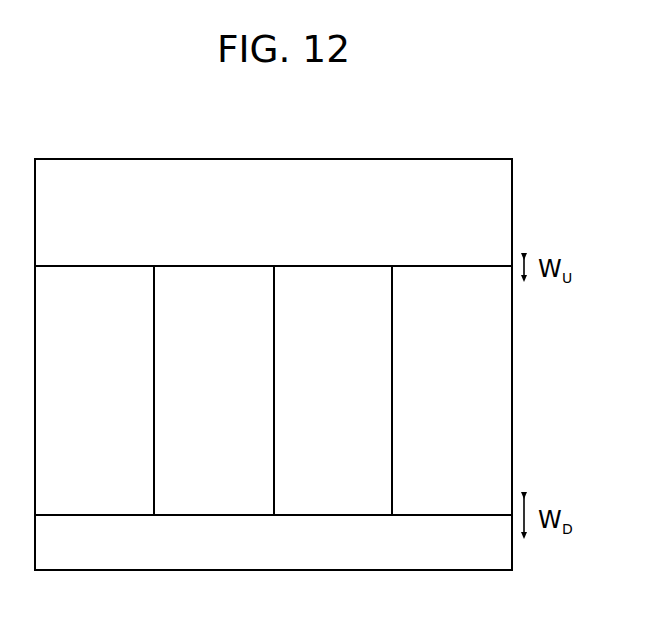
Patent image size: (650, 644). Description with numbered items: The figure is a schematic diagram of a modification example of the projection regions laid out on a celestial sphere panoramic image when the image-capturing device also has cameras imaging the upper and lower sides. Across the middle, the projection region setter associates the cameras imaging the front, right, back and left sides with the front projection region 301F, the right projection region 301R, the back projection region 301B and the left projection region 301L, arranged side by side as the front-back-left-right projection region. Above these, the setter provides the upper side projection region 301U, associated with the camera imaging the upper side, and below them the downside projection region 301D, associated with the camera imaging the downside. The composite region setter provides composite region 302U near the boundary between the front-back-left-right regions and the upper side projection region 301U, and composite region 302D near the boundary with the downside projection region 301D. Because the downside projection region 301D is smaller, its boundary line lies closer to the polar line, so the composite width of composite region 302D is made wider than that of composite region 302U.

The projection region 301U is at (368, 159).
The composite region 302U is at (457, 257).
The projection region 301D is at (375, 570).
The composite region 302D is at (453, 535).
The projection region 301F is at (94, 390).
The projection region 301R is at (214, 390).
The projection region 301B is at (333, 390).
The projection region 301L is at (452, 390).